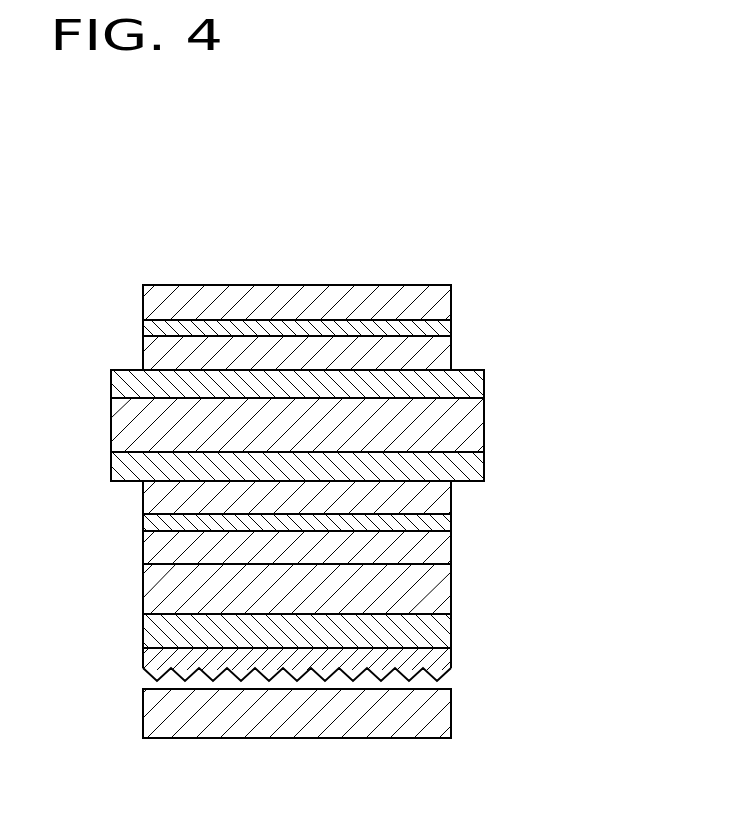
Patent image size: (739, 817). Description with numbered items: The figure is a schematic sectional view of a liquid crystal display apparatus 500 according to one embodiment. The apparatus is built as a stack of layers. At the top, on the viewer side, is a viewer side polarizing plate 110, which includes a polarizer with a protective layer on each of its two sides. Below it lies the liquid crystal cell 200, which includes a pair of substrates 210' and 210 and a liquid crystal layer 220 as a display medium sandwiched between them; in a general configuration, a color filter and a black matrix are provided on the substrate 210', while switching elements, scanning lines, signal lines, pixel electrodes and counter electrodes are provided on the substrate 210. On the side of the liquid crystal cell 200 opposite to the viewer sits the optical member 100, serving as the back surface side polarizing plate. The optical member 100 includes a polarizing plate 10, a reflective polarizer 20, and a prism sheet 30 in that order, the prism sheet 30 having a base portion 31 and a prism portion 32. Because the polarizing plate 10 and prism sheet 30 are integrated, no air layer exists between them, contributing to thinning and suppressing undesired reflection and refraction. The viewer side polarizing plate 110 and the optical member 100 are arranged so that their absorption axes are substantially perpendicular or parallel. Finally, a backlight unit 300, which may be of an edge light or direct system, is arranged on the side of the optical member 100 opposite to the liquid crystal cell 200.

The liquid crystal display apparatus 500 is at (502, 229).
The viewer side polarizing plate 110 is at (585, 282).
The liquid crystal cell 200 is at (585, 363).
The substrate 210' is at (344, 381).
The liquid crystal layer 220 is at (484, 427).
The substrate 210 is at (341, 463).
The optical member 100 is at (585, 512).
The polarizing plate 10 is at (528, 481).
The reflective polarizer 20 is at (452, 590).
The prism sheet 30 is at (528, 612).
The base portion 31 is at (452, 628).
The prism portion 32 is at (452, 660).
The backlight unit 300 is at (447, 720).